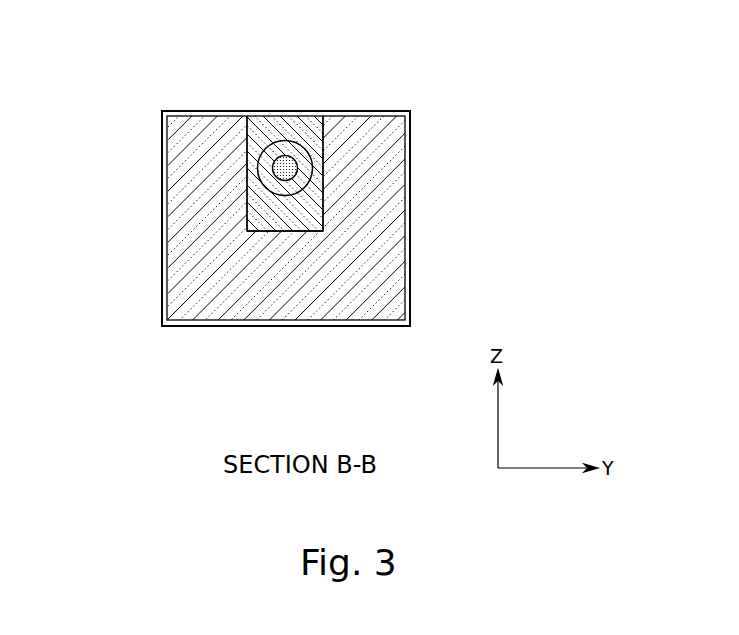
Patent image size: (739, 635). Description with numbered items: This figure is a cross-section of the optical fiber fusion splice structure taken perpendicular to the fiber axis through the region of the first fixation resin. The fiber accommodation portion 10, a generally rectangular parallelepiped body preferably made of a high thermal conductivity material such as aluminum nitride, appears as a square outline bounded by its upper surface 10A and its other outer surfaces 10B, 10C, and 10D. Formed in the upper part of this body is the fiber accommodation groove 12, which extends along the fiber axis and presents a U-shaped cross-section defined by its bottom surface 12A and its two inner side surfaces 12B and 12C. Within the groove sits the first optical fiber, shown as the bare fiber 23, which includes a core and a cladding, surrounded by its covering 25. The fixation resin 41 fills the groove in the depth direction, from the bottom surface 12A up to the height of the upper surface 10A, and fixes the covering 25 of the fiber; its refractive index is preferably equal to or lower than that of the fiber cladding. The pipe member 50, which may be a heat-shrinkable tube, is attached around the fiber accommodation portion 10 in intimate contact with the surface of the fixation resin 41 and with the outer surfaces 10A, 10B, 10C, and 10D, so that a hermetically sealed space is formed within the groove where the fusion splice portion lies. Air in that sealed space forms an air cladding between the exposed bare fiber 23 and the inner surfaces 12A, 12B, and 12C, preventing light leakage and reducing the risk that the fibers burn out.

The fiber accommodation portion 10 is at (392, 235).
The upper surface of the fiber accommodation portion 10A is at (380, 112).
The outer surface of the fiber accommodation portion 10B is at (163, 139).
The outer surface of the fiber accommodation portion 10C is at (407, 145).
The outer surface of the fiber accommodation portion 10D is at (182, 326).
The fiber accommodation groove 12 is at (251, 152).
The bottom surface of the fiber accommodation groove 12A is at (280, 231).
The inner surface of the fiber accommodation groove 12B is at (250, 205).
The inner surface of the fiber accommodation groove 12C is at (322, 206).
The bare fiber 23 is at (302, 156).
The covering 25 is at (281, 140).
The fixation resin 41 is at (250, 134).
The pipe member 50 is at (165, 180).